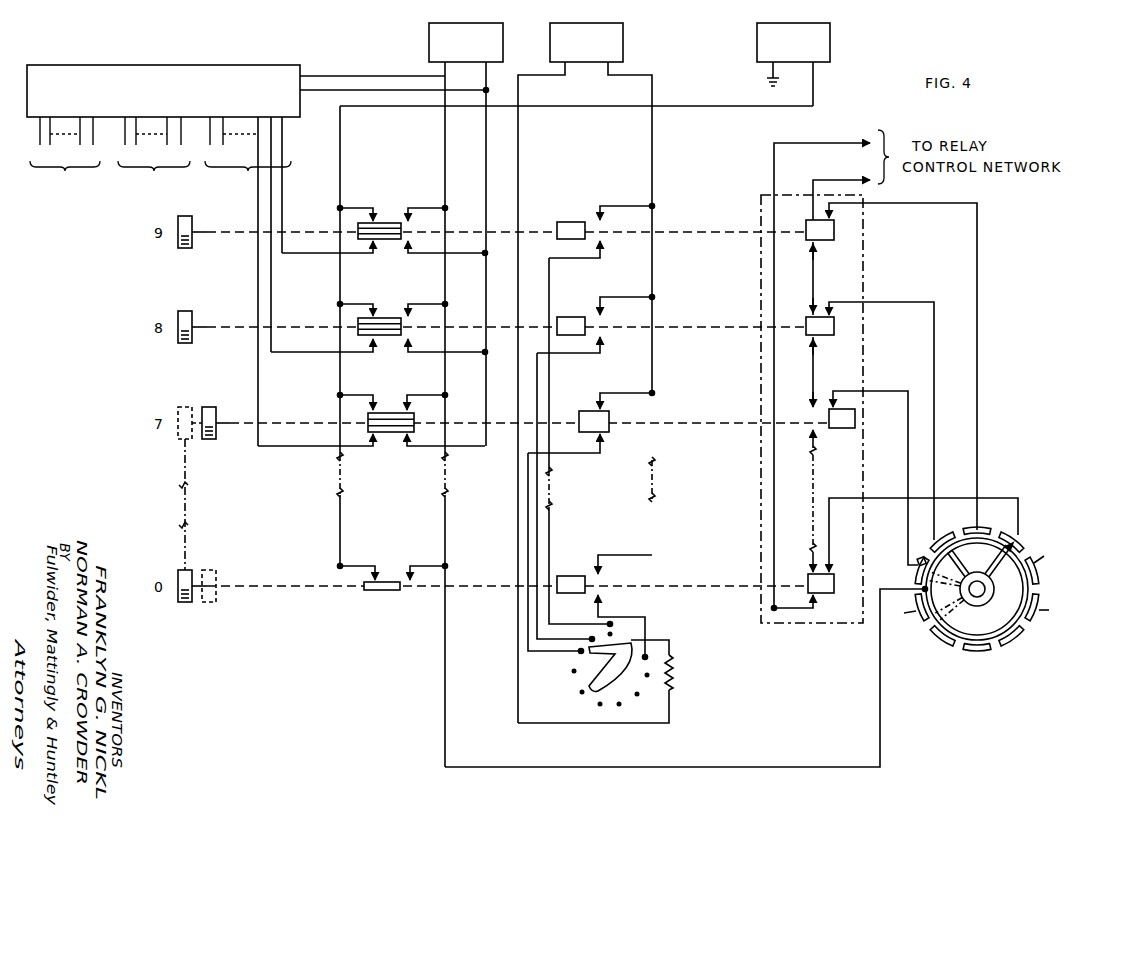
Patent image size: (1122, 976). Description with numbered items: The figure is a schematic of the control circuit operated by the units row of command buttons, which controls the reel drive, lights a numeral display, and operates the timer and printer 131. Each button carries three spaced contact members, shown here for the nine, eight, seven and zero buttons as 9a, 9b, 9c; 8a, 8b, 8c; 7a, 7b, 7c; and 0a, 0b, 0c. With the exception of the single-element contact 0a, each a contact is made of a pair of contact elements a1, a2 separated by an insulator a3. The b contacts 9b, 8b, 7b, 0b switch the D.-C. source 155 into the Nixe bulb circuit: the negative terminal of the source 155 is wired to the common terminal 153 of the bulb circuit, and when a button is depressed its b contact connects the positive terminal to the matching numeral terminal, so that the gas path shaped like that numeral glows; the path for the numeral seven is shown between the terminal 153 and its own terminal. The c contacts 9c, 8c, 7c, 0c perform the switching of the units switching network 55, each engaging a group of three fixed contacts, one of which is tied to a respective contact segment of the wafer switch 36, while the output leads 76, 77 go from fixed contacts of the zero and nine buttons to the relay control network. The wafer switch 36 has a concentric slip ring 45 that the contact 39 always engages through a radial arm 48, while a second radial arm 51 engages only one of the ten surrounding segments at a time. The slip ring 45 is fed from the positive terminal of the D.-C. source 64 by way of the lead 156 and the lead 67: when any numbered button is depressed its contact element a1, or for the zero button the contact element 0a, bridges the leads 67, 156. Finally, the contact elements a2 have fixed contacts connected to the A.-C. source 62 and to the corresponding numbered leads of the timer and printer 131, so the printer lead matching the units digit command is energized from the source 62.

The timer and printer 131 is at (157, 65).
The A.-C. source 62 is at (429, 46).
The D.-C. source 155 is at (625, 48).
The D.-C. source 64 is at (832, 48).
The lead 156 is at (416, 107).
The output lead 77 is at (774, 171).
The output lead 76 is at (843, 179).
The units switching network 55 is at (760, 500).
The common terminal 153 is at (631, 643).
The lead 67 is at (770, 767).
The wafer switch 36 is at (979, 590).
The radial arm 48 is at (953, 568).
The radial arm 51 is at (973, 596).
The contact 39 is at (993, 597).
The slip ring 45 is at (994, 640).
The contact member 9a is at (358, 225).
The contact member 8a is at (356, 321).
The contact member 7a is at (366, 414).
The contact member 0a is at (382, 590).
The contact member 9b is at (572, 222).
The contact member 8b is at (575, 321).
The contact member 7b is at (590, 412).
The contact member 0b is at (569, 576).
The contact member 9c is at (834, 240).
The contact member 8c is at (834, 335).
The contact member 7c is at (843, 428).
The contact member 0c is at (835, 592).
The contact element a1 is at (384, 223).
The contact element a2 is at (392, 240).
The insulator a3 is at (358, 235).